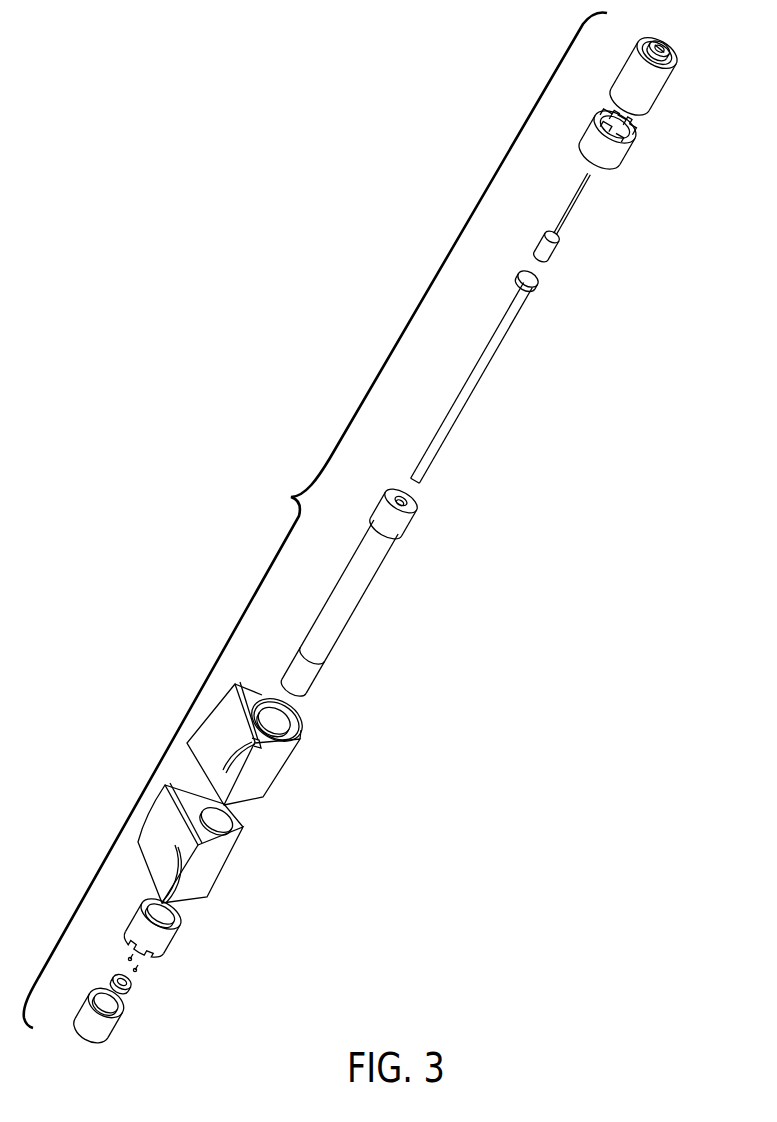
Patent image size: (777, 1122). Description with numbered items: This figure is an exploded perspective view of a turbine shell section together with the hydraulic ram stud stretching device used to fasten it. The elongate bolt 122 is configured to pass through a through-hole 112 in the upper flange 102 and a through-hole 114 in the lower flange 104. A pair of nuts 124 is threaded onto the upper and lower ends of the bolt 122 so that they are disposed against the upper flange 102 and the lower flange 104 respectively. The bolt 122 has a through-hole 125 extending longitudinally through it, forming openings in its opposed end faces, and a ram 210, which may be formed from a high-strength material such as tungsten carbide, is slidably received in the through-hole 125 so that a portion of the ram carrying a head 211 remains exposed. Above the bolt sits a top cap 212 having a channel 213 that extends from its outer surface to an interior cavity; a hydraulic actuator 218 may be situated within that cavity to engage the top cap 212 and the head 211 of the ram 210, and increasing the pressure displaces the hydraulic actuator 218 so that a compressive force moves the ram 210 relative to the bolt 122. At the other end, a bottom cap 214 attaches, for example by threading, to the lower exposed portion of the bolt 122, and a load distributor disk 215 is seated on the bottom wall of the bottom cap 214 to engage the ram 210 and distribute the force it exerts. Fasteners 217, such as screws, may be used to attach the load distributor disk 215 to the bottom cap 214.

The upper flange 102 is at (275, 767).
The lower flange 104 is at (215, 868).
The through-hole 112 is at (282, 716).
The through-hole 114 is at (232, 816).
The bolt 122 is at (388, 525).
The nuts 124 is at (597, 139).
The through-hole 125 is at (404, 500).
The ram 210 is at (488, 352).
The head 211 is at (536, 279).
The top cap 212 is at (658, 85).
The channel 213 is at (665, 47).
The bottom cap 214 is at (112, 1026).
The load distributor disk 215 is at (131, 981).
The fasteners 217 is at (114, 951).
The hydraulic actuator 218 is at (572, 229).